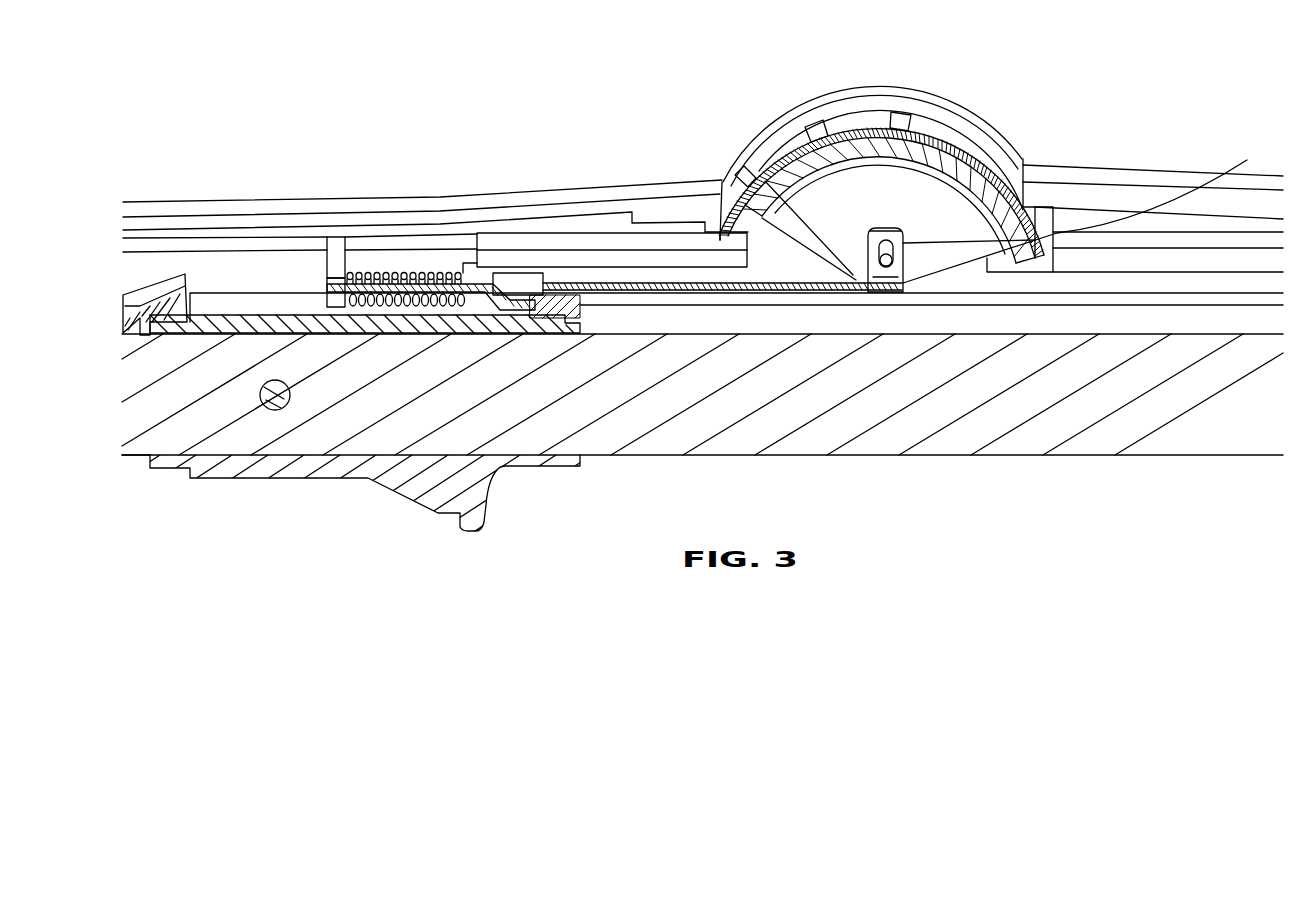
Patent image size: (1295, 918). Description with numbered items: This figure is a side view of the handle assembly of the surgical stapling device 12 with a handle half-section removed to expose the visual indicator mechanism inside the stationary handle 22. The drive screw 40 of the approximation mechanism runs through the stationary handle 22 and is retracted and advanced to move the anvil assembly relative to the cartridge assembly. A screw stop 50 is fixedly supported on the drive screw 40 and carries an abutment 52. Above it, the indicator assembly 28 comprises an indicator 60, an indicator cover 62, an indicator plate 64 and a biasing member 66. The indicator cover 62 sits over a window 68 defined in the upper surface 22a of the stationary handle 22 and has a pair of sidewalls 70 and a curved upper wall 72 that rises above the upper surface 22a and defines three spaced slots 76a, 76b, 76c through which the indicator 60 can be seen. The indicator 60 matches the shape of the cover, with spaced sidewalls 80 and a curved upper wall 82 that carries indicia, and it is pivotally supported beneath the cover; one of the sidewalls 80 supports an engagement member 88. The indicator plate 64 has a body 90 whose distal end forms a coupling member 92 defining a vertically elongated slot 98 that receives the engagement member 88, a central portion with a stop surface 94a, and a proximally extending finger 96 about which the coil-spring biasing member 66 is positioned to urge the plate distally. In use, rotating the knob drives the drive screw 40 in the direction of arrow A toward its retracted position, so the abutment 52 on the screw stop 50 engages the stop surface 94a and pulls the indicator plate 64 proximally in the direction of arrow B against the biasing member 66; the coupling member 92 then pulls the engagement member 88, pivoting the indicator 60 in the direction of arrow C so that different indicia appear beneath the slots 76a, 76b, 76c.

The vehicle roof / top cover 12 is at (247, 196).
The stationary handle 22 is at (347, 200).
The upper surface 22a is at (1163, 163).
The indicator assembly 28 is at (914, 82).
The drive screw 40 is at (1063, 460).
The screw stop 50 is at (281, 484).
The abutment 52 is at (547, 312).
The indicator 60 is at (1010, 162).
The indicator cover 62 is at (930, 143).
The indicator plate 64 is at (697, 281).
The biasing member 66 is at (397, 277).
The window 68 is at (1028, 163).
The sidewalls 70 is at (932, 97).
The curved upper wall 72 is at (983, 153).
The slot 76a is at (893, 117).
The slot 76b is at (810, 128).
The slot 76c is at (750, 163).
The sidewalls 80 is at (928, 260).
The curved upper wall 82 is at (780, 197).
The engagement member 88 is at (886, 266).
The body 90 is at (603, 300).
The coupling member 92 is at (1087, 210).
The stop surface 94a is at (508, 306).
The finger 96 is at (430, 300).
The elongated slot 98 is at (868, 265).
The arrow A is at (1160, 472).
The arrow B is at (612, 273).
The arrow C is at (832, 191).